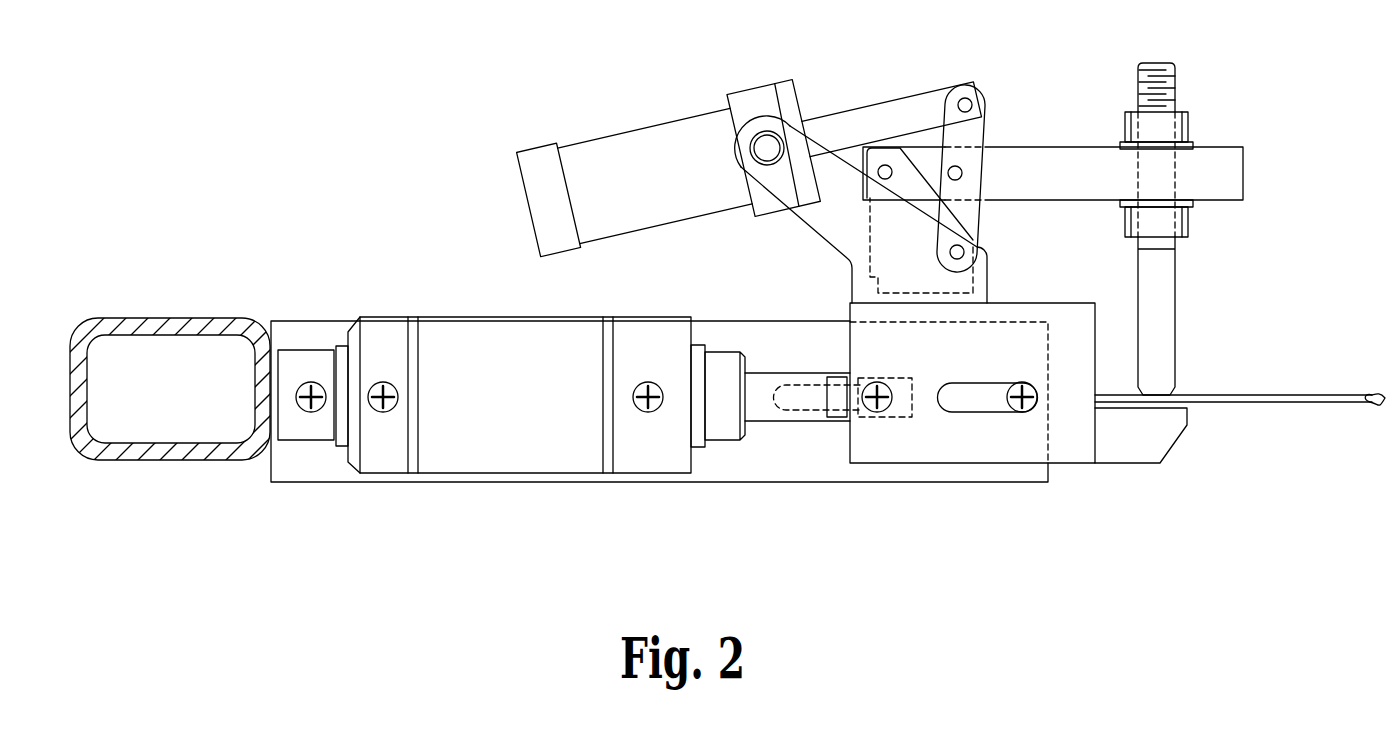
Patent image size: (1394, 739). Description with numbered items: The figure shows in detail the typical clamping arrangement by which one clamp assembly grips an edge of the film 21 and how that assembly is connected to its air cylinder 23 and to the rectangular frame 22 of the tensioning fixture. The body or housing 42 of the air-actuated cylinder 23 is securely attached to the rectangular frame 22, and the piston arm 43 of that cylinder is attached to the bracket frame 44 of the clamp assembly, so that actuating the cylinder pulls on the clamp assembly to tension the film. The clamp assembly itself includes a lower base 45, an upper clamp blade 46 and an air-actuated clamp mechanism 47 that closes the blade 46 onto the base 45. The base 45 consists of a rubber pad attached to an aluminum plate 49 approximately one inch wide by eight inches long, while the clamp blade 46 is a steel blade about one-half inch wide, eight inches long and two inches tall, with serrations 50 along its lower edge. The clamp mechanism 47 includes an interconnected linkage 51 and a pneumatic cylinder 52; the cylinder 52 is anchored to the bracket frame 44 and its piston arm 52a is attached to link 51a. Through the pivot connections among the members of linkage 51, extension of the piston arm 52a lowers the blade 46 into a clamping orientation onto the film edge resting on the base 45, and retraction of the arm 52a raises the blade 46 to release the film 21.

The film 21 is at (1317, 404).
The rectangular frame 22 is at (207, 325).
The air-actuated cylinder 23 is at (536, 298).
The body or housing 42 is at (443, 338).
The piston arm 43 is at (770, 415).
The bracket frame 44 is at (1067, 440).
The lower base 45 is at (1160, 425).
The upper clamp blade 46 is at (1163, 290).
The air-actuated clamp mechanism 47 is at (1002, 130).
The aluminum plate 49 is at (1143, 456).
The serrations 50 is at (1198, 384).
The linkage 51 is at (998, 228).
The link 51a is at (965, 135).
The pneumatic cylinder 52 is at (643, 143).
The piston arm 52a is at (843, 127).